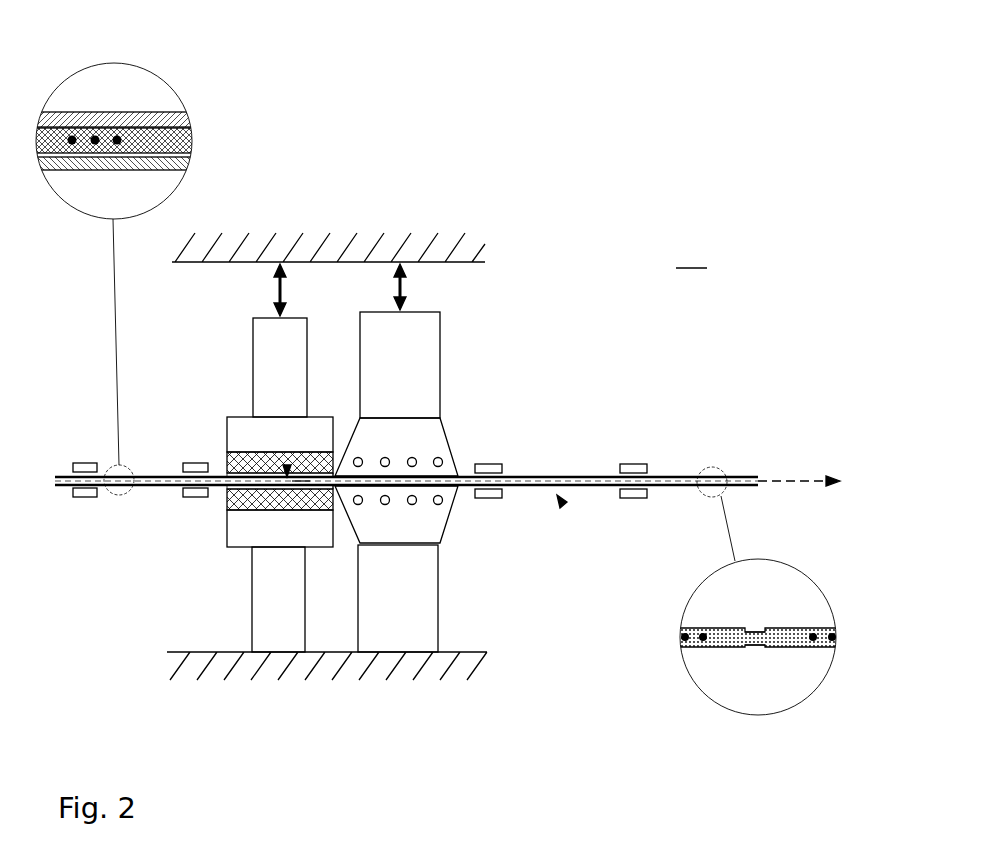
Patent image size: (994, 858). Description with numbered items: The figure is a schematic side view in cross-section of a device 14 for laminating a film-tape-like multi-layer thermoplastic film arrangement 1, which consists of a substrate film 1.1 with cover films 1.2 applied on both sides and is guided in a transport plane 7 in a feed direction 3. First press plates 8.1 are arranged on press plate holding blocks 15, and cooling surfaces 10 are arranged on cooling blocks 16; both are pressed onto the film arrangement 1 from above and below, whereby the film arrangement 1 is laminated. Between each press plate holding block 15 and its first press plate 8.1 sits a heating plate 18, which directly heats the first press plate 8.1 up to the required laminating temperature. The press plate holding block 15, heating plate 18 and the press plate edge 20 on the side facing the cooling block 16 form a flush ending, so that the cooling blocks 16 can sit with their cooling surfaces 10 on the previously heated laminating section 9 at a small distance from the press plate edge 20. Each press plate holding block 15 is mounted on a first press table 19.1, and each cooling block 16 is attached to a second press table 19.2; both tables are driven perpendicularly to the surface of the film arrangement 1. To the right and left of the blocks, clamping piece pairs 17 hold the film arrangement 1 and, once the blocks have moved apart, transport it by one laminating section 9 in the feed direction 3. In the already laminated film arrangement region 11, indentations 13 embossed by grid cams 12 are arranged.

The film arrangement 1 is at (136, 88).
The substrate film 1.1 is at (162, 142).
The cover films 1.2 is at (163, 118).
The feed direction 3 is at (836, 464).
The transport plane 7 is at (778, 478).
The first press plate 8.1 is at (268, 476).
The laminating section 9 is at (288, 466).
The cooling surface 10 is at (458, 472).
The laminated film arrangement region 11 is at (562, 503).
The grid cams 12 is at (298, 477).
The indentations 13 is at (712, 477).
The device for laminating 14 is at (692, 253).
The press plate holding block 15 is at (243, 438).
The cooling block 16 is at (403, 445).
The clamping piece pairs 17 is at (85, 492).
The heating plate 18 is at (245, 463).
The first press table 19.1 is at (280, 365).
The second press table 19.2 is at (405, 365).
The press plate edge 20 is at (333, 474).